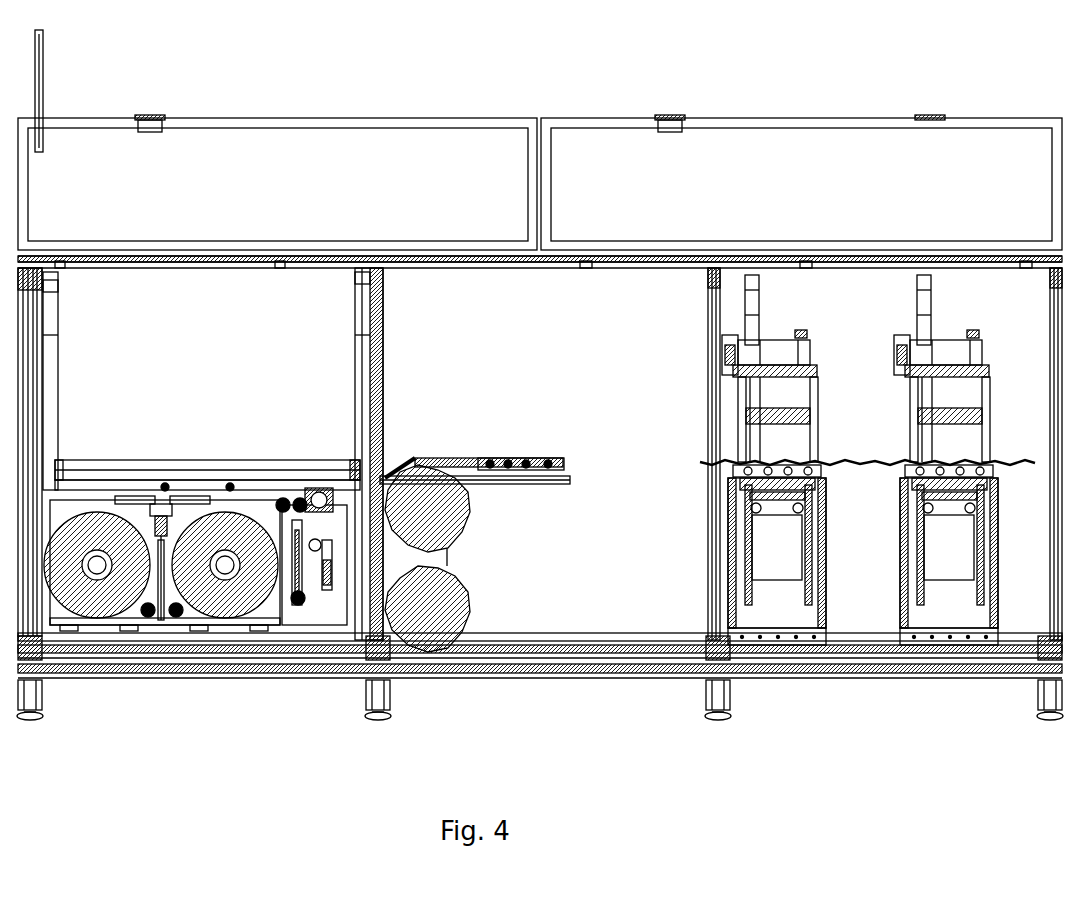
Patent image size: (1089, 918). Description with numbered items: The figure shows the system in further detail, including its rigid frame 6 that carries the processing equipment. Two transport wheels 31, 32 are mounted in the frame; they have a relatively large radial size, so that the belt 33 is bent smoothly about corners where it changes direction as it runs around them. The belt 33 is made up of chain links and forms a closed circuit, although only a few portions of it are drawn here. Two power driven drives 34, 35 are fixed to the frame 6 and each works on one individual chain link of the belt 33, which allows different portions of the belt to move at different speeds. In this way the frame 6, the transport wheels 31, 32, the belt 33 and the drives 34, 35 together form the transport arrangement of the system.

The rigid frame 6 is at (540, 140).
The transport wheel 31 is at (446, 508).
The transport wheel 32 is at (446, 609).
The belt 33 is at (475, 448).
The power driven drive 34 is at (525, 446).
The power driven drive 35 is at (752, 466).